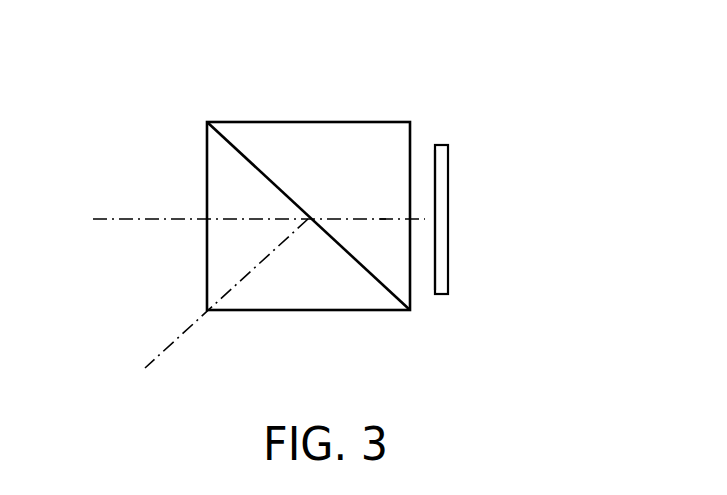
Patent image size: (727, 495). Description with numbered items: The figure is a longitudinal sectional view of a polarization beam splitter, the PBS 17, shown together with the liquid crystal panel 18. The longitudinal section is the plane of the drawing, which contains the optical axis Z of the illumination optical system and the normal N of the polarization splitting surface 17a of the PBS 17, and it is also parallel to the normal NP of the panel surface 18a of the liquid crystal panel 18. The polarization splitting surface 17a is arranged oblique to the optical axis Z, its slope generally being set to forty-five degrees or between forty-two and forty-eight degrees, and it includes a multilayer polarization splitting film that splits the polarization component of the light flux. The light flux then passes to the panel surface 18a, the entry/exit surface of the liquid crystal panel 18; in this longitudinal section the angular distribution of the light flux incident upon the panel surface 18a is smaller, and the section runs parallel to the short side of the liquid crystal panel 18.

The polarization beam splitter 17 is at (333, 121).
The polarization splitting surface 17a is at (360, 267).
The liquid crystal panel 18 is at (441, 165).
The panel surface 18a is at (433, 270).
The normal of the panel surface NP is at (383, 213).
The optical axis Z is at (137, 218).
The normal of the polarization splitting surface N is at (180, 333).